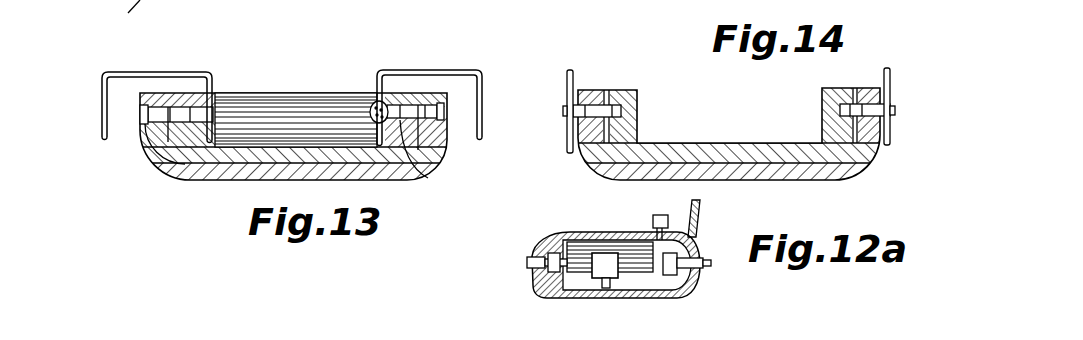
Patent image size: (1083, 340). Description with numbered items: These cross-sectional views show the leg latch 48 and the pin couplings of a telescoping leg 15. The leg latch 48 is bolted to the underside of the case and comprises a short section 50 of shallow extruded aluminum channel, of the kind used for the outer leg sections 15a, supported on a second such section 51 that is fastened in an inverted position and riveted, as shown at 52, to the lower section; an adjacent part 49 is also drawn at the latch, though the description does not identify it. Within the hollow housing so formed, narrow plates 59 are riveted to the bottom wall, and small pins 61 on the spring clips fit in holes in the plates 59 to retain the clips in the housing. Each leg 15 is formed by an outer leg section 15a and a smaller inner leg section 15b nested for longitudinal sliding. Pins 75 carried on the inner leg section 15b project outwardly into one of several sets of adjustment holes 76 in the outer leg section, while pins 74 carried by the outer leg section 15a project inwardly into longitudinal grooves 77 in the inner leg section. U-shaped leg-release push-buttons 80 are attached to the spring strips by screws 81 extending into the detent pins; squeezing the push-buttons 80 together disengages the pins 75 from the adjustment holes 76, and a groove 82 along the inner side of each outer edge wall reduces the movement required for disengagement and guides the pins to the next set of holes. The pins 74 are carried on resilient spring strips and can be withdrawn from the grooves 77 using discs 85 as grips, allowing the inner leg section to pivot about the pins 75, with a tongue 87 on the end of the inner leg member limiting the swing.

In FIG. 13, the outer leg section 15a is at (195, 178).
In FIG. 14, the outer leg section 15a is at (736, 180).
In FIG. 13, the inner leg section 15b is at (305, 145).
In FIG. 14, the inner leg section 15b is at (664, 147).
In FIG. 14, the leg 15 is at (608, 13).
In FIG. 13, the tongue 87 is at (294, 96).
In FIG. 13, the groove 82 is at (156, 153).
In FIG. 14, the groove 82 is at (602, 127).
In FIG. 13, the screws 81 is at (217, 113).
In FIG. 13, the pins 75 is at (168, 107).
In FIG. 13, the longitudinal grooves 77 is at (178, 112).
In FIG. 14, the longitudinal grooves 77 is at (626, 91).
In FIG. 13, the adjustment holes 76 is at (145, 127).
In FIG. 13, the leg-release push-buttons 80 is at (100, 113).
In FIG. 14, the discs 85 is at (574, 72).
In FIG. 14, the pins 74 is at (568, 135).
In FIG. 12A, the leg latch 48 is at (586, 266).
In FIG. 12A, the section 50 is at (658, 298).
In FIG. 12A, the narrow plates 59 is at (556, 288).
In FIG. 12A, the second section 51 is at (627, 234).
In FIG. 12A, the small pins 61 is at (604, 289).
In FIG. 12A, the rivets 52 is at (528, 269).
In FIG. 12A, the mounting plate 49 is at (698, 212).